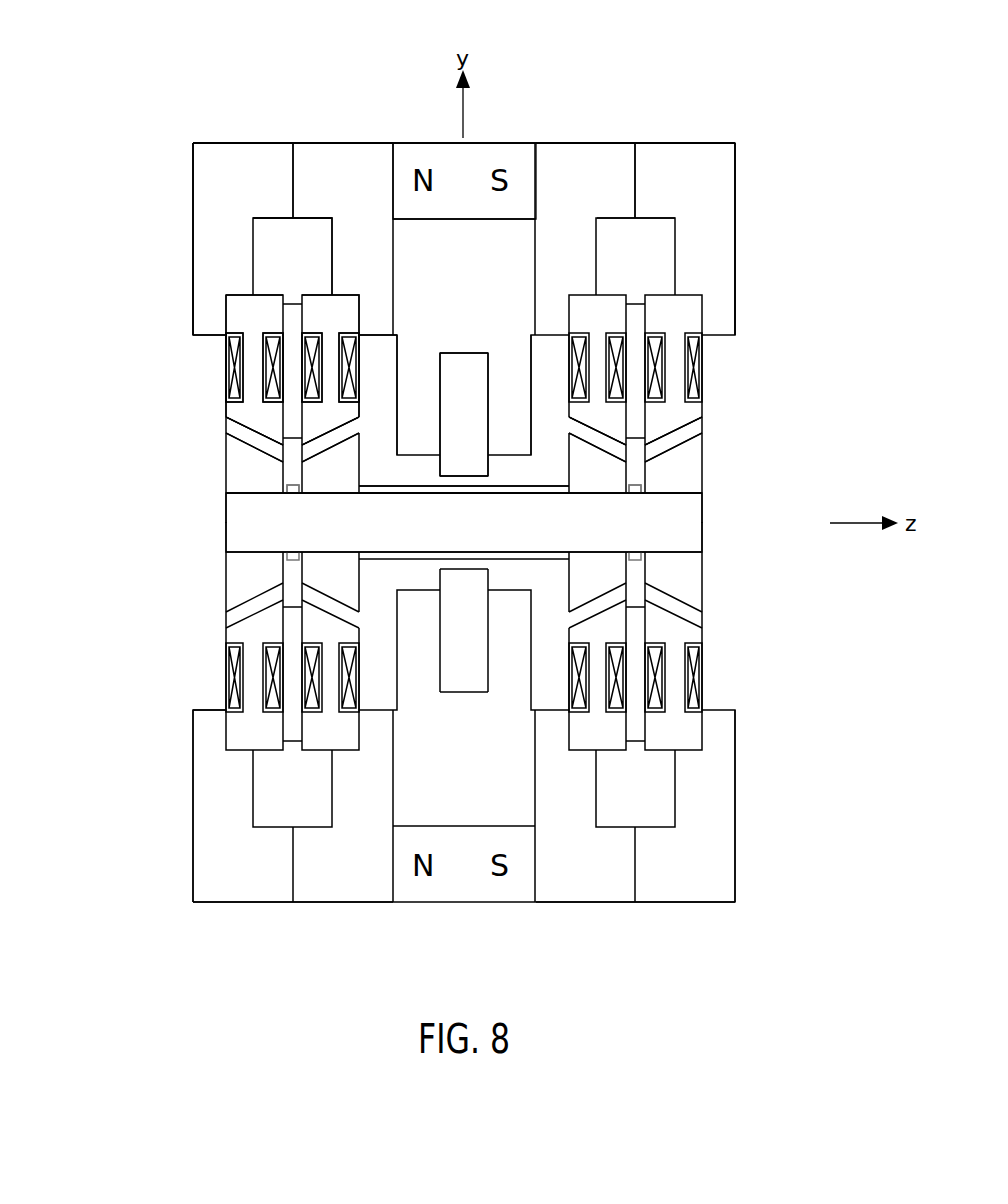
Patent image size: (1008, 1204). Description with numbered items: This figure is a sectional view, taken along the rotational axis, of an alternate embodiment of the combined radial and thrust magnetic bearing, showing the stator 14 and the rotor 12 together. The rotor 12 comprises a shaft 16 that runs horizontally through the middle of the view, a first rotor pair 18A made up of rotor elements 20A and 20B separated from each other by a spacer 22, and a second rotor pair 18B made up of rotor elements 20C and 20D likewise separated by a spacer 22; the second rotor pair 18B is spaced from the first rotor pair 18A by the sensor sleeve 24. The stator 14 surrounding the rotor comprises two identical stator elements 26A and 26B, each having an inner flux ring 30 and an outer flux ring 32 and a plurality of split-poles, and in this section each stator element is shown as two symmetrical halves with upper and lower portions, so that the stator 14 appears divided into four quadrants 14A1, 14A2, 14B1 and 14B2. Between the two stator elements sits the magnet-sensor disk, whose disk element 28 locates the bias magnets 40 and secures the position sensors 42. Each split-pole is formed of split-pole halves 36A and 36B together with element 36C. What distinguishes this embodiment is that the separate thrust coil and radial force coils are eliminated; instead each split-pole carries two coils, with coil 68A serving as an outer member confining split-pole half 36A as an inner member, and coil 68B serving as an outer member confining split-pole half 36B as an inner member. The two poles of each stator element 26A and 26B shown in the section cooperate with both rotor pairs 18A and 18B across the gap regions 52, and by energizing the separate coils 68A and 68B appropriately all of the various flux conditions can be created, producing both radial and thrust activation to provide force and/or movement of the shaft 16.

The rotor 12 is at (76, 535).
The stator 14 is at (546, 28).
The stator quadrant 14A1 is at (196, 95).
The stator quadrant 14A2 is at (214, 983).
The stator quadrant 14B1 is at (789, 95).
The stator quadrant 14B2 is at (787, 983).
The shaft 16 is at (697, 535).
The first rotor pair 18A is at (112, 423).
The second rotor pair 18B is at (820, 423).
The rotor element 20A is at (245, 475).
The rotor element 20B is at (330, 463).
The rotor element 20C is at (610, 458).
The rotor element 20D is at (697, 468).
The spacer 22 is at (290, 485).
The sensor sleeve 24 is at (397, 493).
The stator element 26A is at (313, 80).
The stator element 26B is at (656, 80).
The disk element 28 is at (483, 255).
The inner flux ring 30 is at (330, 148).
The outer flux ring 32 is at (240, 150).
The split-pole half 36A is at (232, 333).
The split-pole half 36B is at (312, 323).
The split-pole element 36C is at (293, 313).
The bias magnet 40 is at (478, 143).
The position sensor 42 is at (468, 360).
The air gap 52 is at (345, 188).
The coil 68A is at (232, 390).
The coil 68B is at (360, 380).